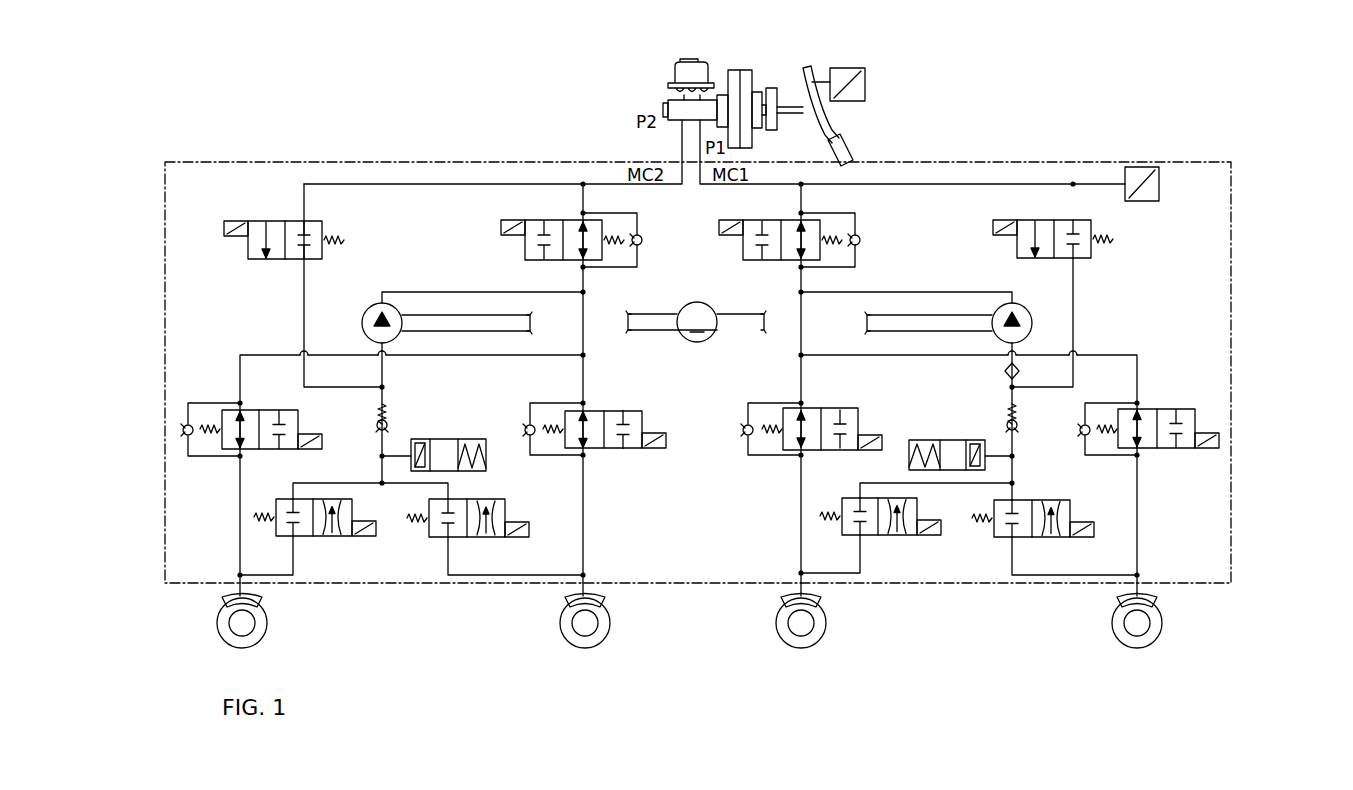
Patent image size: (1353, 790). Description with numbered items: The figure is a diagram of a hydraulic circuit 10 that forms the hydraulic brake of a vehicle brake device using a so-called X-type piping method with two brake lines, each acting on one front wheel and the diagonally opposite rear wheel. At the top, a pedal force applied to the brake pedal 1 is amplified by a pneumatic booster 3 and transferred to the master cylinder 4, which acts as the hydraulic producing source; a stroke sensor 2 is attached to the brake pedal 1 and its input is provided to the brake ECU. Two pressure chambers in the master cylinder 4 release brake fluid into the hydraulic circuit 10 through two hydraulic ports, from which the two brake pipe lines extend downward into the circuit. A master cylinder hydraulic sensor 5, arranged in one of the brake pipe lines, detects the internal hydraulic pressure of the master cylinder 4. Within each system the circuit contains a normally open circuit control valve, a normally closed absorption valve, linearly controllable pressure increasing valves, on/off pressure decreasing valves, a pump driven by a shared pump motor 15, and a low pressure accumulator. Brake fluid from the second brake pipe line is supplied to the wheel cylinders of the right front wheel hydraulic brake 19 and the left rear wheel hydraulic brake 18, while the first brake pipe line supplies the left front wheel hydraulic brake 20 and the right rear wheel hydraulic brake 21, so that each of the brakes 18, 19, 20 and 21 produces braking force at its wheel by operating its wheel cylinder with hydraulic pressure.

The brake pedal 1 is at (838, 120).
The stroke sensor 2 is at (858, 72).
The booster 3 is at (742, 76).
The master cylinder 4 is at (675, 93).
The master cylinder hydraulic sensor 5 is at (1150, 165).
The hydraulic circuit 10 is at (1233, 320).
The pump motor 15 is at (695, 303).
The left rear wheel hydraulic brake 18 is at (265, 598).
The right front wheel hydraulic brake 19 is at (608, 598).
The left front wheel hydraulic brake 20 is at (822, 598).
The right rear wheel hydraulic brake 21 is at (1160, 598).